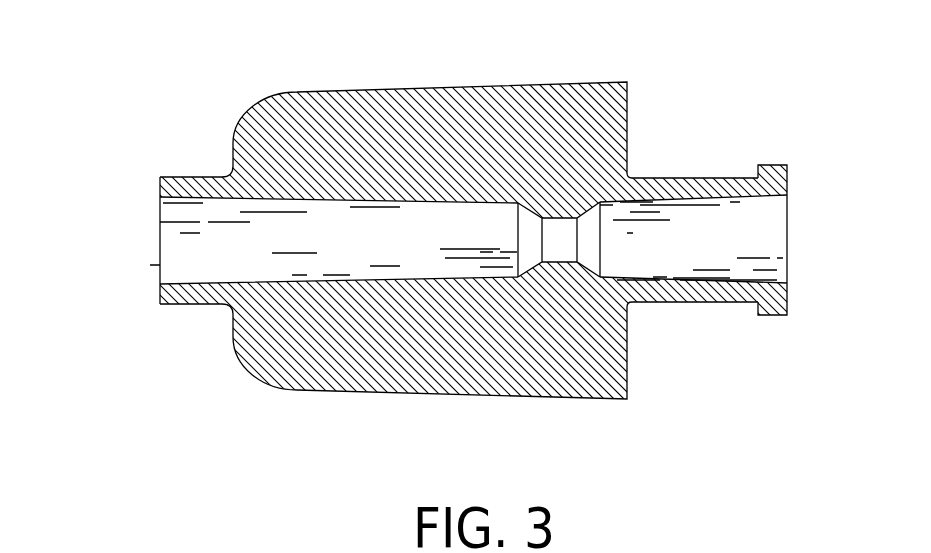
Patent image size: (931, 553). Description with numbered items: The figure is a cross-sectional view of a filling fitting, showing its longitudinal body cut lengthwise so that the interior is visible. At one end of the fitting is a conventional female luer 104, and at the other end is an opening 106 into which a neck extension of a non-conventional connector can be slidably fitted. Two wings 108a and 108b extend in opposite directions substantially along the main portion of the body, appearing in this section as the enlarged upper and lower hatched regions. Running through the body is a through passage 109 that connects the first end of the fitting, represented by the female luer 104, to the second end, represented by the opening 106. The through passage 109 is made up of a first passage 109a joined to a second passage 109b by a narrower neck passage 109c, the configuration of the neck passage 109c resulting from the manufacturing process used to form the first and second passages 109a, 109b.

The female luer 104 is at (777, 157).
The opening 106 is at (158, 263).
The wing 108a is at (338, 112).
The wing 108b is at (408, 358).
The through passage 109 is at (468, 208).
The first passage 109a is at (317, 253).
The second passage 109b is at (730, 253).
The neck passage 109c is at (553, 250).